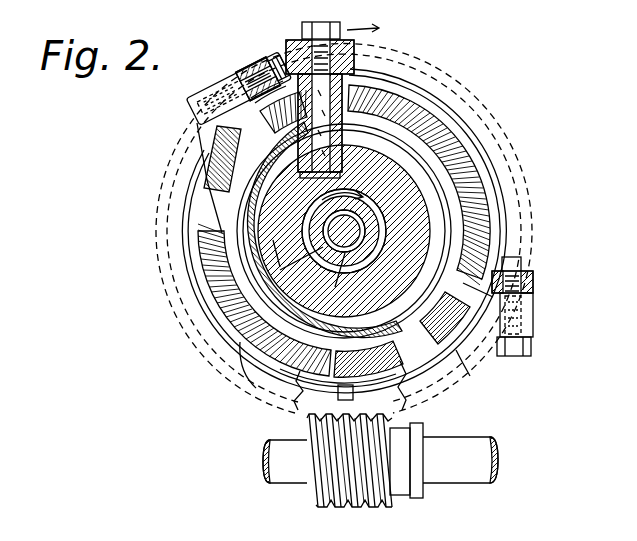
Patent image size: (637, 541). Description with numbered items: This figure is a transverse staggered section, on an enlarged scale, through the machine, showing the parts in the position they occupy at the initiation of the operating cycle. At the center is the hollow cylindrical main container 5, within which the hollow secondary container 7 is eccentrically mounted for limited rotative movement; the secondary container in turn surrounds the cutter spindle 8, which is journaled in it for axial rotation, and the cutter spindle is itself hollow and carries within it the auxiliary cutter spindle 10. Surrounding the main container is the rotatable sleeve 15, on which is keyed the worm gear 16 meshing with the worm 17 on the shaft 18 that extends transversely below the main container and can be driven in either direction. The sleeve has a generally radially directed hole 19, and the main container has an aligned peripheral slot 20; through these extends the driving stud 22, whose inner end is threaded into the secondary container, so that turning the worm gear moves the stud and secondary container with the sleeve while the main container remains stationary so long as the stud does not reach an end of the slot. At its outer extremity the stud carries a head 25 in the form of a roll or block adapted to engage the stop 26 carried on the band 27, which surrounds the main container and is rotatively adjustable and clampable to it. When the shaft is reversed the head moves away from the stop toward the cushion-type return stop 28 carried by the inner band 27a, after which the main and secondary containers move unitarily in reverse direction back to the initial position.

The main container 5 is at (358, 338).
The secondary container 7 is at (272, 242).
The cutter spindle 8 is at (280, 267).
The auxiliary cutter spindle 10 is at (330, 293).
The rotatable sleeve 15 is at (240, 367).
The worm gear 16 is at (297, 412).
The worm 17 is at (355, 508).
The shaft 18 is at (380, 460).
The radially directed hole 19 is at (420, 86).
The peripheral slot 20 is at (427, 292).
The driving stud 22 is at (362, 73).
The head 25 is at (348, 52).
The stop 26 is at (512, 258).
The band 27 is at (460, 360).
The inner band 27a is at (213, 140).
The return stop 28 is at (284, 73).